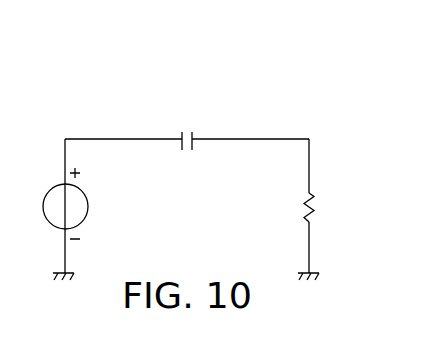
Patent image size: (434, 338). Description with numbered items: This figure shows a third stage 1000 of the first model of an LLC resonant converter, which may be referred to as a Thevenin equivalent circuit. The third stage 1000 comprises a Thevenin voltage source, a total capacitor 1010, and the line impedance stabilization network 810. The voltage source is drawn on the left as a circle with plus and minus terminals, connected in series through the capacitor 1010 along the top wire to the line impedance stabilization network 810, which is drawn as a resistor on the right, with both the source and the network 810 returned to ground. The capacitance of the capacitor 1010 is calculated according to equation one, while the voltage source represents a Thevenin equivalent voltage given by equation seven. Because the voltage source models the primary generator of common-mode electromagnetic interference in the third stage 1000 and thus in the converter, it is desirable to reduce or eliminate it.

The third stage 1000 is at (202, 150).
The capacitor Ctot 1010 is at (188, 152).
The LISN 810 is at (302, 205).